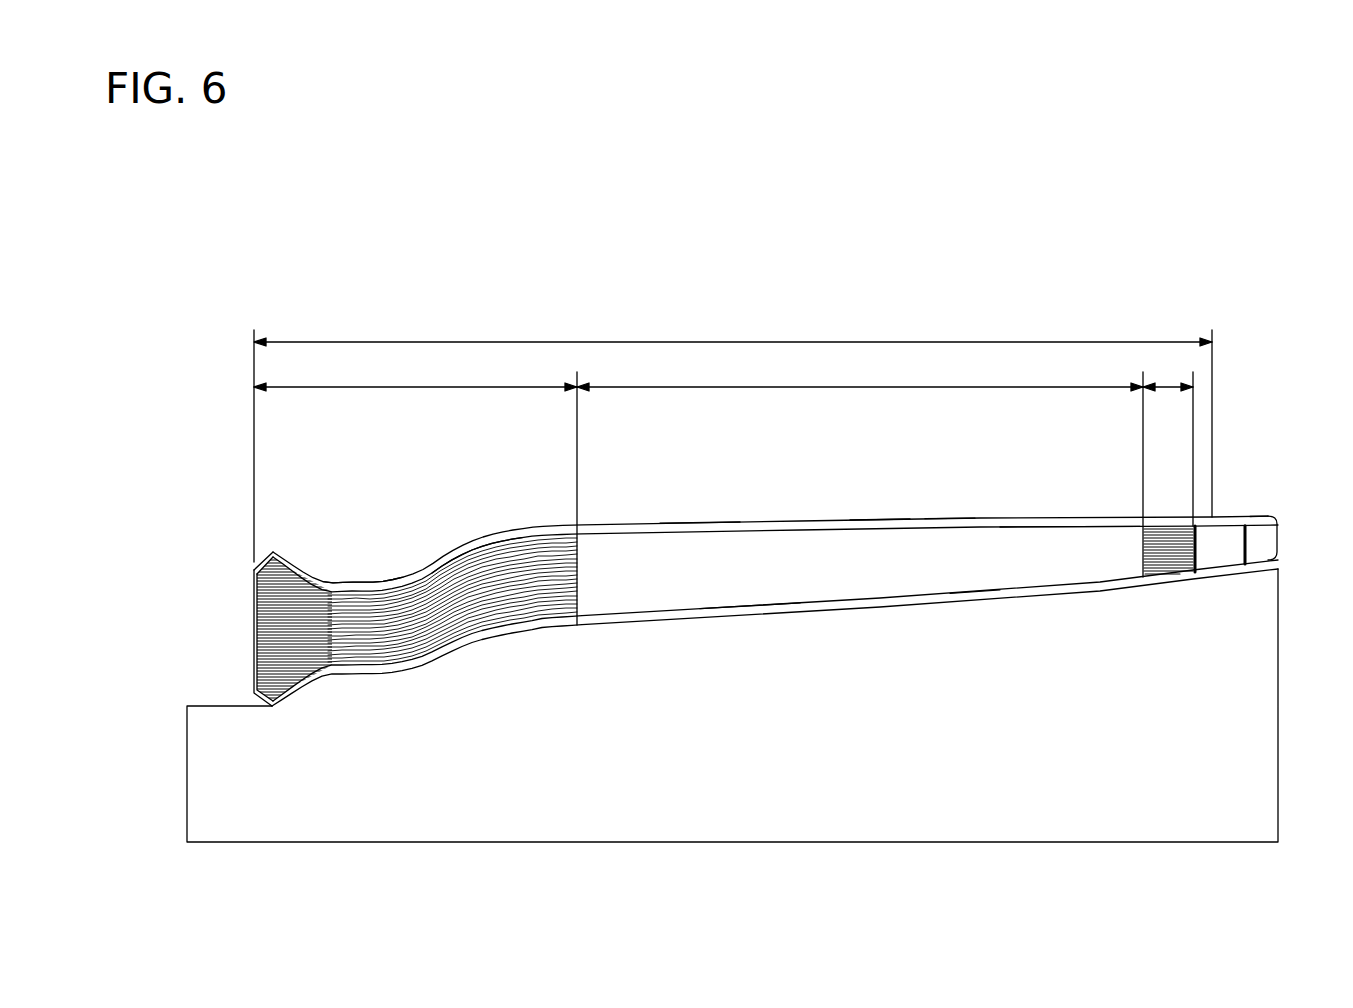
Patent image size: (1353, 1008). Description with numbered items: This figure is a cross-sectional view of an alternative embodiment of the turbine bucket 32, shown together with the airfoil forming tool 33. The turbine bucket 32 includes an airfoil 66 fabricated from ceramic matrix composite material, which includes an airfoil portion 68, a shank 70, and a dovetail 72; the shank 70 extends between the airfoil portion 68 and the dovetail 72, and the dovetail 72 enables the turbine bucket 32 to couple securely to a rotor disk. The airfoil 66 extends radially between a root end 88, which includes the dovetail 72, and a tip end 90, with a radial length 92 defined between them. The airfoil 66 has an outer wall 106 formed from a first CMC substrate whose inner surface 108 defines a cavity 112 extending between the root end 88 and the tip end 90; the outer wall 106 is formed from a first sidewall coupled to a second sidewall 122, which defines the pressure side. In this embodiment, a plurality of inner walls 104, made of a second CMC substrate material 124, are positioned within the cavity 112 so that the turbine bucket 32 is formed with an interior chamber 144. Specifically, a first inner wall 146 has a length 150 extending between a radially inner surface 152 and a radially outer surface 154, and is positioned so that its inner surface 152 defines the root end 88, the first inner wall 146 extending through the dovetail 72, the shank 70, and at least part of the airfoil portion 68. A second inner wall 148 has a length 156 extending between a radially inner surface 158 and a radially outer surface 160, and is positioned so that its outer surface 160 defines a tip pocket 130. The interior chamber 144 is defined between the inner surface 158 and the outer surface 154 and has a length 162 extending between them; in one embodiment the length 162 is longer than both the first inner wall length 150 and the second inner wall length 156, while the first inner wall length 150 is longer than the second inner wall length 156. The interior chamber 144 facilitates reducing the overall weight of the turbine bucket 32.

The turbine bucket 32 is at (1047, 290).
The airfoil forming tool 33 is at (1253, 780).
The airfoil 66 is at (918, 236).
The airfoil portion 68 is at (690, 523).
The shank 70 is at (384, 578).
The dovetail 72 is at (290, 548).
The root end 88 is at (237, 569).
The tip end 90 is at (1230, 462).
The radial length 92 is at (503, 342).
The inner wall 104 is at (405, 637).
The outer wall 106 is at (877, 519).
The inner surface 108 is at (950, 519).
The cavity 112 is at (995, 552).
The second sidewall 122 is at (812, 520).
The second CMC substrate material 124 is at (815, 608).
The tip pocket 130 is at (1235, 490).
The interior chamber 144 is at (747, 577).
The first inner wall 146 is at (490, 556).
The second inner wall 148 is at (1156, 580).
The first inner wall length 150 is at (362, 387).
The radially inner surface 152 is at (253, 622).
The radially outer surface 154 is at (578, 567).
The second inner wall length 156 is at (1160, 387).
The radially inner surface 158 is at (1137, 556).
The radially outer surface 160 is at (1200, 551).
The interior chamber length 162 is at (795, 387).